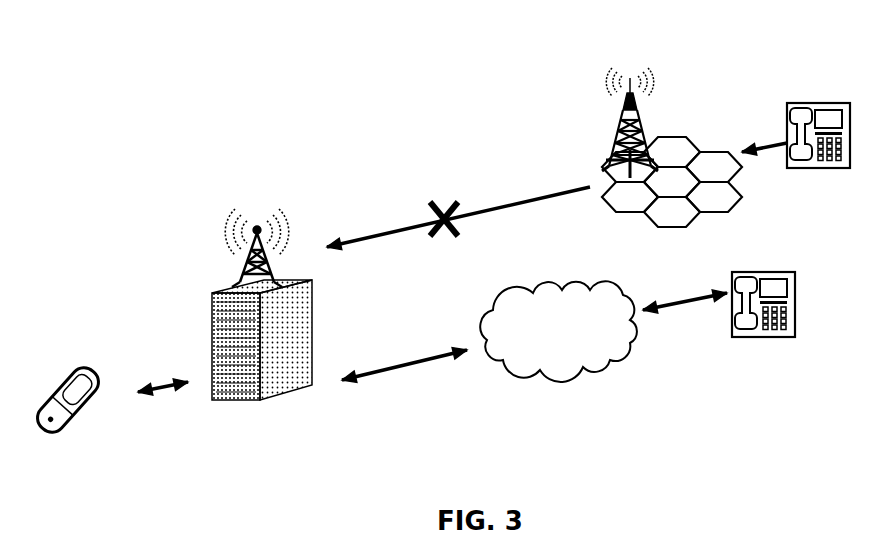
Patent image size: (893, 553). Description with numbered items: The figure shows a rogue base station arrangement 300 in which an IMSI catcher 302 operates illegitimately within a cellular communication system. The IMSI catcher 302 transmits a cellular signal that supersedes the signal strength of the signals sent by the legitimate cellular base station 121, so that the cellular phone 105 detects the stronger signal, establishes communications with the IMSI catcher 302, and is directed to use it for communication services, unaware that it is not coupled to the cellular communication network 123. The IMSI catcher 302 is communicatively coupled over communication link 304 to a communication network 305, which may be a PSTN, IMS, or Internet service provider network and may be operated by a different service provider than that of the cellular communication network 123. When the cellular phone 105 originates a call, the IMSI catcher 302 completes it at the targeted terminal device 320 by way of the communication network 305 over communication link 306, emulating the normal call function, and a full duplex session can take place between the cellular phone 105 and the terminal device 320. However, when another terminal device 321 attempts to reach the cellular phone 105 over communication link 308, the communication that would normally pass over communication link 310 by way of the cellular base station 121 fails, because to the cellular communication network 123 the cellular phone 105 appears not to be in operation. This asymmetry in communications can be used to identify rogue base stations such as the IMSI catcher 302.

The cellular phone 105 is at (98, 388).
The cellular base station 121 is at (650, 80).
The cellular communication network 123 is at (690, 145).
The rogue base station system 300 is at (483, 475).
The IMSI catcher 302 is at (258, 228).
The communication link 304 is at (350, 375).
The communication network 305 is at (558, 331).
The communication link 306 is at (645, 303).
The communication link 308 is at (770, 152).
The communication link 310 is at (508, 200).
The terminal device 320 is at (797, 300).
The terminal device 321 is at (800, 103).